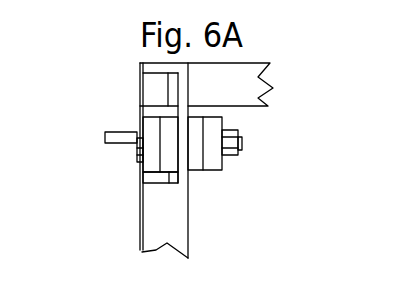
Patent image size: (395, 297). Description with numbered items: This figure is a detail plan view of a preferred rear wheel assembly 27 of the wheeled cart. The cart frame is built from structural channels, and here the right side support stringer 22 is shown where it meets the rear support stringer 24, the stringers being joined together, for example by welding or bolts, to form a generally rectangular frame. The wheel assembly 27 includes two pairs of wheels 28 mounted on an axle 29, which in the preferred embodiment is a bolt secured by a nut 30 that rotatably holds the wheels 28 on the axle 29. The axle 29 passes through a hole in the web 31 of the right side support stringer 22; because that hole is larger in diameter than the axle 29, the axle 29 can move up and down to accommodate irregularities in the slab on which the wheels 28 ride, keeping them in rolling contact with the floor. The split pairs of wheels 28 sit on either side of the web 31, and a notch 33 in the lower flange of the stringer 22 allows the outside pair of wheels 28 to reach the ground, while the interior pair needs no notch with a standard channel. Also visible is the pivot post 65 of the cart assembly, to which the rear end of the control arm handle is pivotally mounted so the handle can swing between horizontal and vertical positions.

The right side support stringer 22 is at (182, 227).
The rear support stringer 24 is at (258, 95).
The wheel assembly 27 is at (259, 138).
The wheels 28 is at (148, 162).
The axle 29 is at (242, 137).
The nut 30 is at (228, 155).
The web 31 is at (168, 108).
The notch 33 is at (160, 178).
The pivot post 65 is at (105, 143).